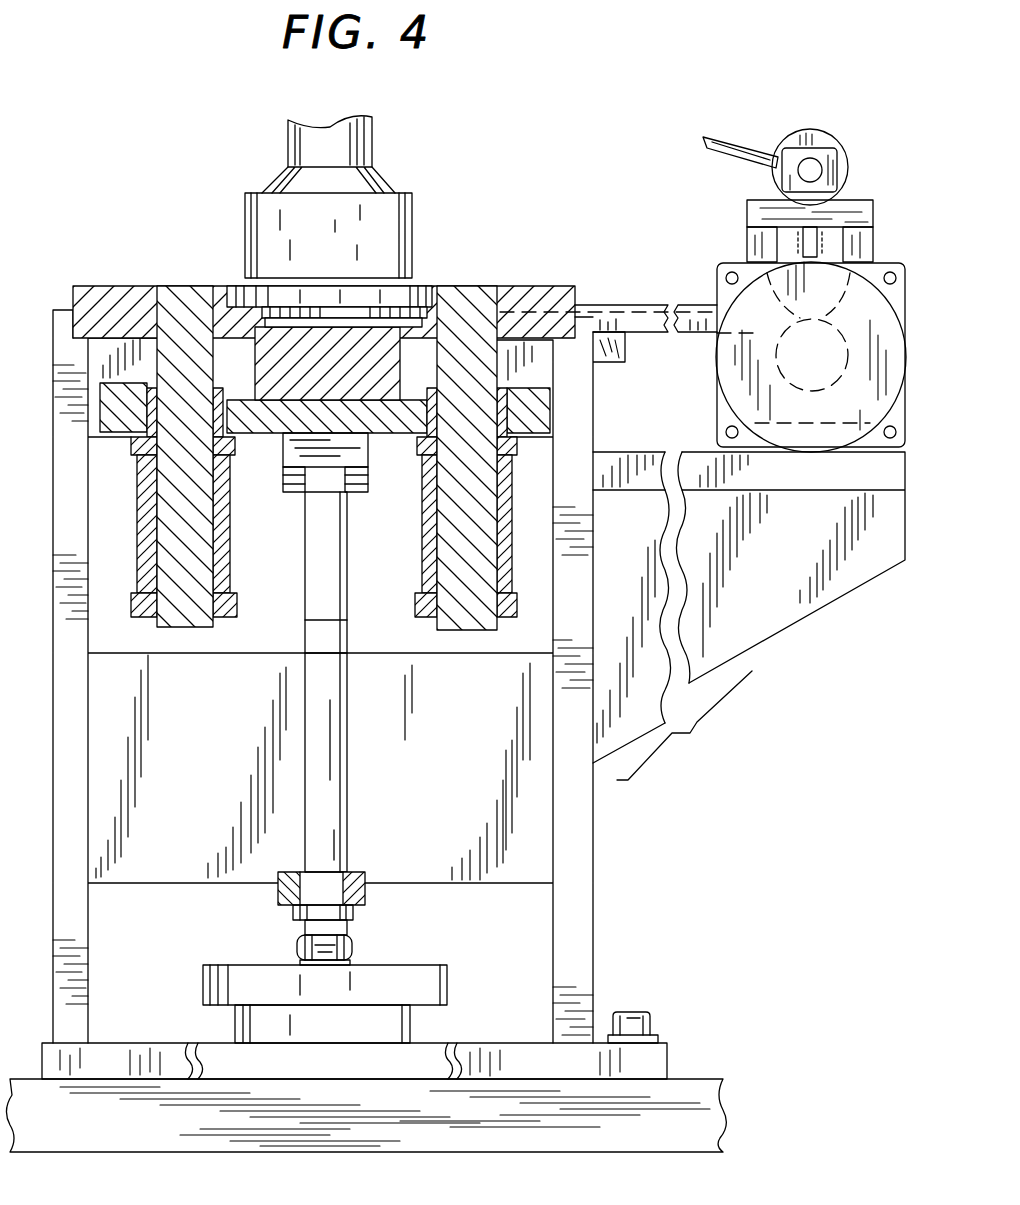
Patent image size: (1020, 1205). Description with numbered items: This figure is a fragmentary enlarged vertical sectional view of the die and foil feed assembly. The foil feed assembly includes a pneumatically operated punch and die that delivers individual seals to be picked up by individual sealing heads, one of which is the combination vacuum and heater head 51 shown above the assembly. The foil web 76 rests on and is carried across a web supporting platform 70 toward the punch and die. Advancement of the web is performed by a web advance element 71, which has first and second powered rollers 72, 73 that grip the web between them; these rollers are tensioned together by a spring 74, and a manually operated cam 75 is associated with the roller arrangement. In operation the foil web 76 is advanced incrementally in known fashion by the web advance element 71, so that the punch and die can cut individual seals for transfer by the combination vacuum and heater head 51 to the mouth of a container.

The combination vacuum and heater head 51 is at (413, 242).
The web supporting platform 70 is at (551, 297).
The web advance element 71 is at (746, 210).
The first powered roller 72 is at (876, 256).
The second powered roller 73 is at (811, 357).
The spring 74 is at (827, 238).
The manually operated cam 75 is at (792, 134).
The foil web 76 is at (608, 304).